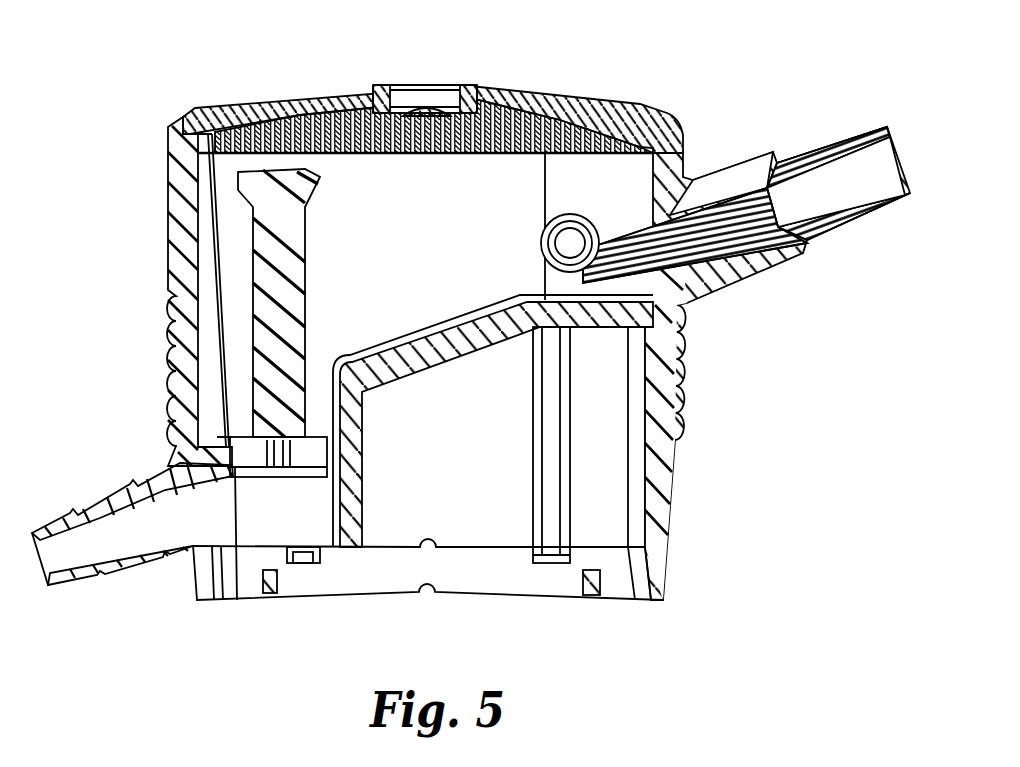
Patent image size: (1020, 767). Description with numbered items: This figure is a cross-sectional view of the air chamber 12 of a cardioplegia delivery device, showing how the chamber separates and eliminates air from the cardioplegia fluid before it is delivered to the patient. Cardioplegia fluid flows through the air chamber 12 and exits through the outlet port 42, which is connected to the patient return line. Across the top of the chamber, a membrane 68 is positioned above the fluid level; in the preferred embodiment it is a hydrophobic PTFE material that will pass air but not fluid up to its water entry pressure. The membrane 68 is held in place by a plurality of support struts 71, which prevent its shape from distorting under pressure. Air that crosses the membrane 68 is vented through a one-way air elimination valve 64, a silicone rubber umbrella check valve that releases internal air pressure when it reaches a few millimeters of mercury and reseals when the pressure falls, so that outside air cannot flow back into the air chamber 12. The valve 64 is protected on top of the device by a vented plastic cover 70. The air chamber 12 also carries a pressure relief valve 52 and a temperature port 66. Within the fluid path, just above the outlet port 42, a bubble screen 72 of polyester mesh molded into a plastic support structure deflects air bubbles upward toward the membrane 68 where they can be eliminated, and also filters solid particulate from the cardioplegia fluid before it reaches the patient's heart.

The air chamber 12 is at (637, 110).
The outlet port 42 is at (80, 510).
The pressure relief valve 52 is at (583, 222).
The one-way air elimination valve 64 is at (402, 108).
The temperature port 66 is at (743, 278).
The membrane 68 is at (424, 157).
The vented plastic cover 70 is at (450, 85).
The support struts 71 is at (317, 113).
The bubble screen 72 is at (306, 257).